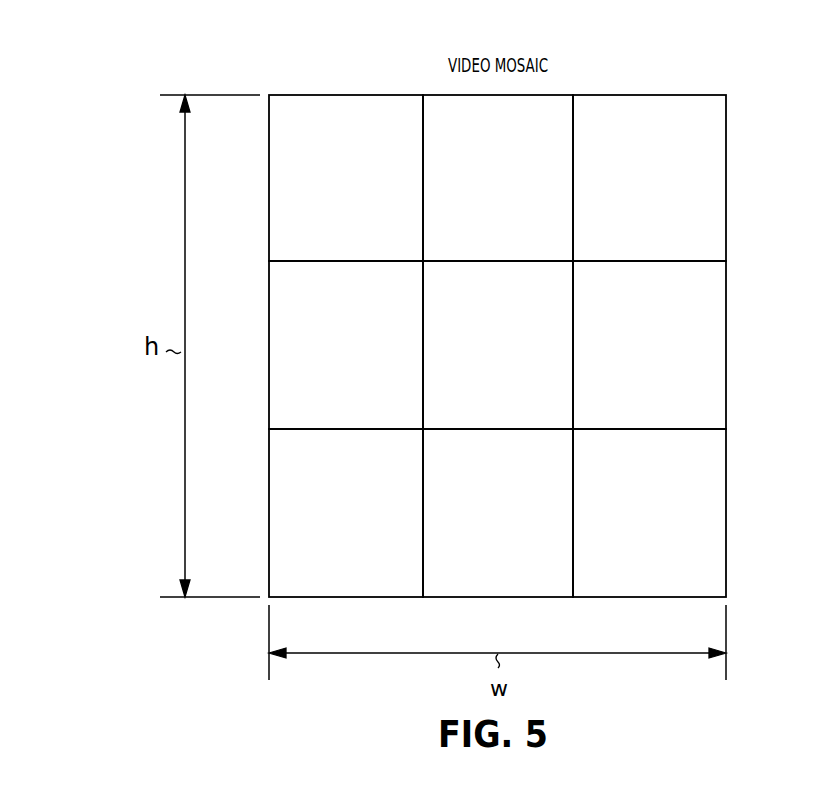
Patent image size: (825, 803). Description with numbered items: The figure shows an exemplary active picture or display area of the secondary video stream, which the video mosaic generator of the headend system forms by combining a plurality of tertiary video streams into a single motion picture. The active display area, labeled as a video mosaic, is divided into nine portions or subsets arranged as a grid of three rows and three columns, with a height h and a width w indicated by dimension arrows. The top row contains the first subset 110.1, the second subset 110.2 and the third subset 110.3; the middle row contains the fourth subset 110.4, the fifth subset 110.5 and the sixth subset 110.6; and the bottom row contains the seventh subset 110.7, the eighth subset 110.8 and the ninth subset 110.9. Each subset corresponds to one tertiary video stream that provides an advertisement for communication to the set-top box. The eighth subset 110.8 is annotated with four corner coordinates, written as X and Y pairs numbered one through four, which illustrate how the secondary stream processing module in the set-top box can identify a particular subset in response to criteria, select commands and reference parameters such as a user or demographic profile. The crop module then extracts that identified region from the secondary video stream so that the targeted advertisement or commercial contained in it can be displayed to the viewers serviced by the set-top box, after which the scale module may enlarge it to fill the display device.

The subset 110.1 is at (268, 177).
The subset 110.2 is at (552, 95).
The subset 110.3 is at (728, 178).
The subset 110.4 is at (268, 346).
The subset 110.5 is at (563, 289).
The subset 110.6 is at (728, 346).
The subset 110.7 is at (268, 512).
The subset 110.8 is at (498, 598).
The subset 110.9 is at (728, 512).